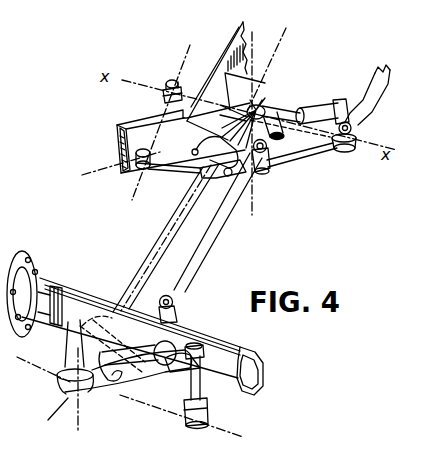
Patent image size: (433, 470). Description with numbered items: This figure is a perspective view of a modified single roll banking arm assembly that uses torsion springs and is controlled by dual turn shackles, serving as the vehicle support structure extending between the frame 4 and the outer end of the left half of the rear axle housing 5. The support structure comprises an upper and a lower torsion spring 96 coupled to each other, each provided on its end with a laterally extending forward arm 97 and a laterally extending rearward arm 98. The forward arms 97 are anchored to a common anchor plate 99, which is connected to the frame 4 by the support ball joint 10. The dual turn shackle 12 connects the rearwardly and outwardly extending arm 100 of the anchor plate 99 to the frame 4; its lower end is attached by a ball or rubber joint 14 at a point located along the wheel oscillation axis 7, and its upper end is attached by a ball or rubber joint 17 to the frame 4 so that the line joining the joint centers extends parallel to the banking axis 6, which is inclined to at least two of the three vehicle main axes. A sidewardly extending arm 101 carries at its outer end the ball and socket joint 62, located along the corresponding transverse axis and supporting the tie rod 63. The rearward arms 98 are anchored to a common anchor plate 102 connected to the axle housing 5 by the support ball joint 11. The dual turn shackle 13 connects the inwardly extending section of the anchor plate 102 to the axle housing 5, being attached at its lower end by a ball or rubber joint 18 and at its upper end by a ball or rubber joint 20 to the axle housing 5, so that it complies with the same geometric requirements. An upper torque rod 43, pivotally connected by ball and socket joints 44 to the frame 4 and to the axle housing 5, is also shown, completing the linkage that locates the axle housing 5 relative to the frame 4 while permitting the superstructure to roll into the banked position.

The frame section 4 is at (243, 22).
The rigid axle housing 5 is at (245, 345).
The banking axis 6 is at (286, 30).
The wheel oscillation axis 7 is at (94, 170).
The support ball joint 10 is at (262, 100).
The support ball joint 11 is at (62, 382).
The dual turn shackle 12 is at (152, 118).
The dual turn shackle 13 is at (200, 393).
The ball or rubber joint 14 is at (144, 172).
The ball or rubber joint 17 is at (162, 98).
The ball or rubber joint 18 is at (207, 410).
The ball or rubber joint 20 is at (206, 340).
The upper torque rod 43 is at (215, 239).
The ball and socket joints 44 is at (270, 172).
The ball and socket joint 62 is at (356, 133).
The tie rod 63 is at (373, 72).
The torsion spring 96 is at (162, 236).
The forward arm 97 is at (312, 108).
The rearward arm 98 is at (128, 394).
The anchor plate 99 is at (260, 109).
The arm 100 is at (178, 182).
The sidewardly extending arm 101 is at (322, 152).
The anchor plate 102 is at (90, 392).